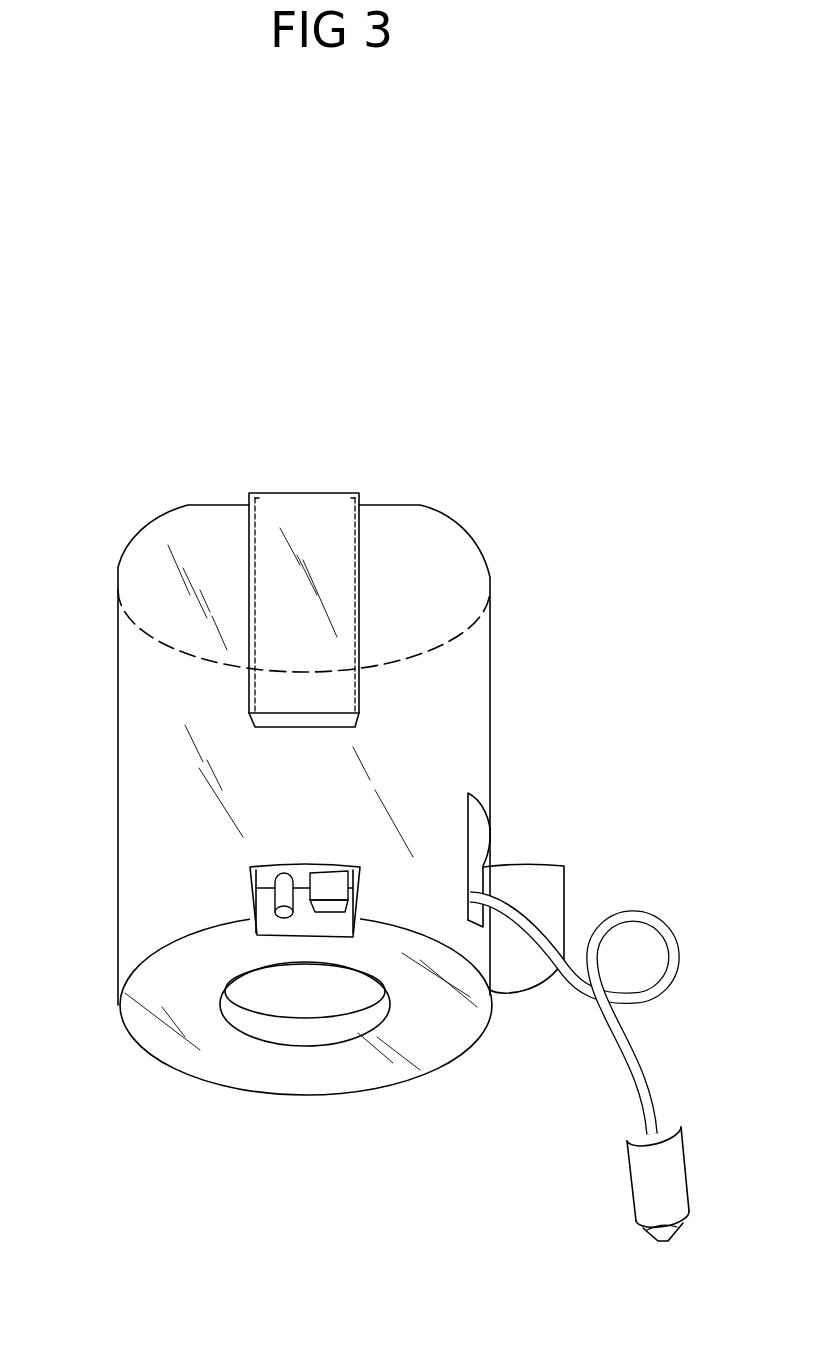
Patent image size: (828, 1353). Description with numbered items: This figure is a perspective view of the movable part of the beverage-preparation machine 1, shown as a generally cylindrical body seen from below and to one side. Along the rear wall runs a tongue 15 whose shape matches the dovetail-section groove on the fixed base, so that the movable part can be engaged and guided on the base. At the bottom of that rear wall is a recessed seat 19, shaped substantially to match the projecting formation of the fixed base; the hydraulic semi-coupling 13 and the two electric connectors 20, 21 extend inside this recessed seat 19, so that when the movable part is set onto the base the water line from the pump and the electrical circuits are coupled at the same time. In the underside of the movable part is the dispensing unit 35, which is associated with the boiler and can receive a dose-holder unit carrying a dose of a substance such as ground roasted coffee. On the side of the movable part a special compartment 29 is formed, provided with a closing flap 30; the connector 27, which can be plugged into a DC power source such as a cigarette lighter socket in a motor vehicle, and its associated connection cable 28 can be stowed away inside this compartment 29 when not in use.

The dispensing device 1 is at (132, 420).
The semi-coupling 13 is at (282, 897).
The tongue 15 is at (312, 513).
The recessed seat 19 is at (282, 979).
The electric connector 20 is at (323, 897).
The electric connector 21 is at (342, 890).
The connector 27 is at (640, 1187).
The connection cable 28 is at (640, 913).
The compartment 29 is at (483, 870).
The closing flap 30 is at (525, 967).
The dispensing unit 35 is at (287, 1027).